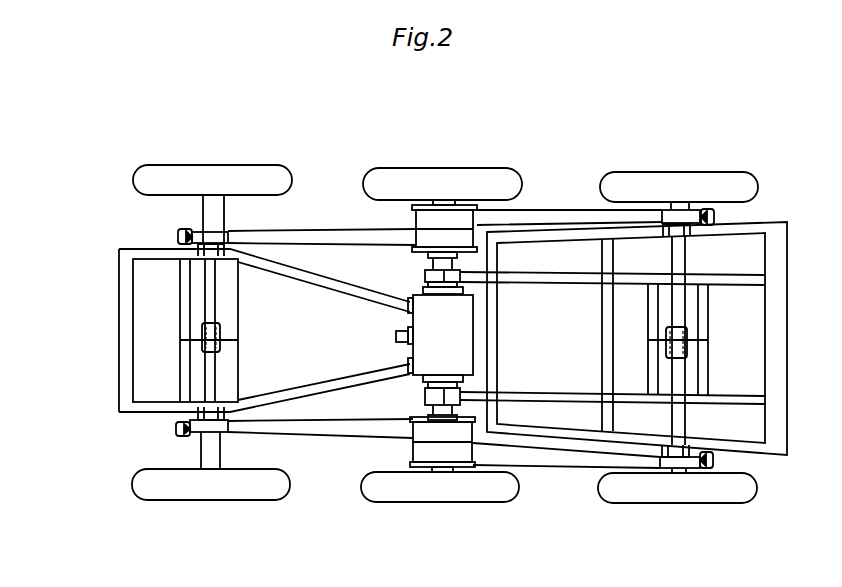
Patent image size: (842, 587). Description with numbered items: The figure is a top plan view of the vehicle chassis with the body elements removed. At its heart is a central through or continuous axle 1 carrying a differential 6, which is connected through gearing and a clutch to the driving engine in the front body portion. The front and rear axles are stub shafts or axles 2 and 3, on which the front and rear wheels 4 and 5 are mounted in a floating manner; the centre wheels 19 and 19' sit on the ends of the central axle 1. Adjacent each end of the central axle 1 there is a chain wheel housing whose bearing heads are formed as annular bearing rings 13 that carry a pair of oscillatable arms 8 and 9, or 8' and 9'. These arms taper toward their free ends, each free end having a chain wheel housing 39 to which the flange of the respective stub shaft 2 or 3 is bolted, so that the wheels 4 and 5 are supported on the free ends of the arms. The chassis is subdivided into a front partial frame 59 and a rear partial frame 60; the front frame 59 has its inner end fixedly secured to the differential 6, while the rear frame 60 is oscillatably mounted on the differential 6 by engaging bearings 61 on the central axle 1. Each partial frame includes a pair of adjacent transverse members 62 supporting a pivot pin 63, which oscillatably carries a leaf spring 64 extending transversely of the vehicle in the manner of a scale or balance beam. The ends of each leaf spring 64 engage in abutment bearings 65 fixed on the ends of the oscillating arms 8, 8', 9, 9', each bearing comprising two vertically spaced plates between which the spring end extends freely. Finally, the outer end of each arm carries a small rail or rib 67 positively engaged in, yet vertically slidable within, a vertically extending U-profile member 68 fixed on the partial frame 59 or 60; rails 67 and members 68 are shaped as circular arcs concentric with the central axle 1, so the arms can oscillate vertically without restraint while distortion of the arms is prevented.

The central through axle 1 is at (436, 265).
The front stub axle 2 is at (212, 213).
The rear stub axle 3 is at (683, 206).
The front wheels 4 is at (213, 184).
The rear wheels 5 is at (643, 184).
The differential 6 is at (452, 347).
The front oscillatable arm 8 is at (322, 213).
The front oscillatable arm 8' is at (320, 456).
The rear oscillatable arm 9 is at (569, 204).
The rear oscillatable arm 9' is at (566, 470).
The bearing ring 13 is at (427, 218).
The centre wheel 19 is at (420, 190).
The centre wheel 19' is at (440, 460).
The chain wheel housing 39 is at (214, 233).
The front partial frame 59 is at (130, 332).
The rear partial frame 60 is at (773, 333).
The bearings 61 is at (428, 278).
The transverse members 62 is at (183, 279).
The pivot pin 63 is at (184, 337).
The leaf spring 64 is at (210, 365).
The abutment bearing 65 is at (224, 236).
The rail 67 is at (178, 233).
The U-profile member 68 is at (200, 246).